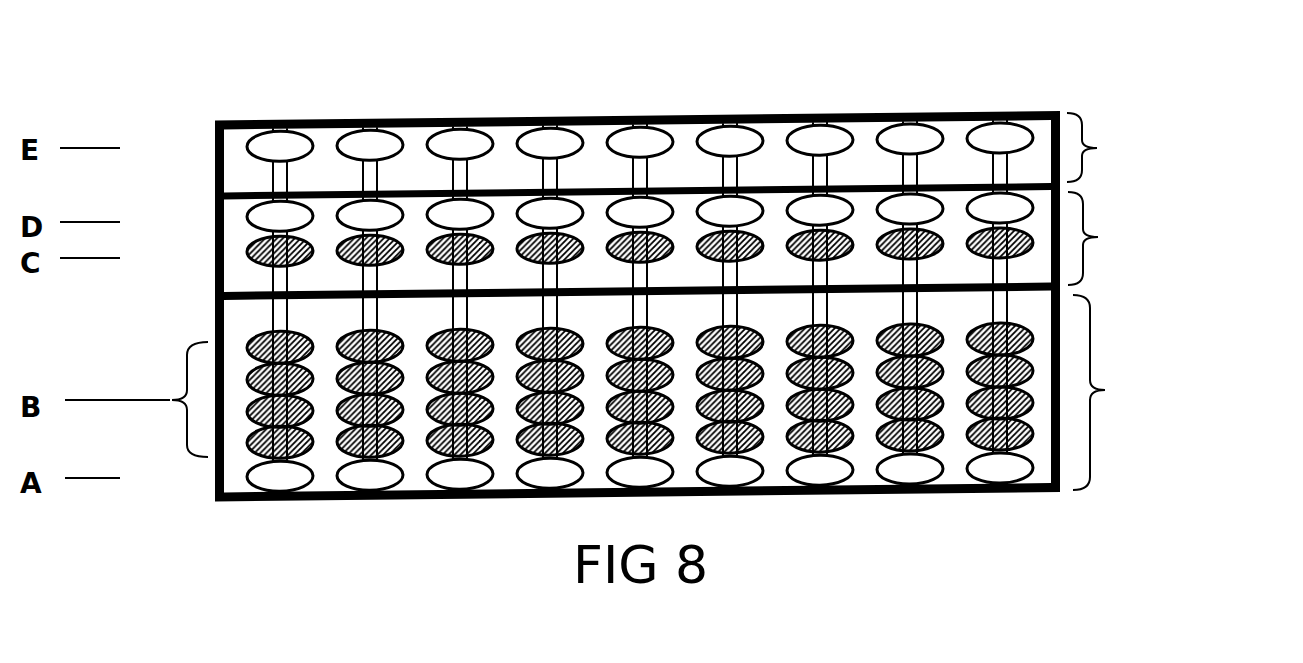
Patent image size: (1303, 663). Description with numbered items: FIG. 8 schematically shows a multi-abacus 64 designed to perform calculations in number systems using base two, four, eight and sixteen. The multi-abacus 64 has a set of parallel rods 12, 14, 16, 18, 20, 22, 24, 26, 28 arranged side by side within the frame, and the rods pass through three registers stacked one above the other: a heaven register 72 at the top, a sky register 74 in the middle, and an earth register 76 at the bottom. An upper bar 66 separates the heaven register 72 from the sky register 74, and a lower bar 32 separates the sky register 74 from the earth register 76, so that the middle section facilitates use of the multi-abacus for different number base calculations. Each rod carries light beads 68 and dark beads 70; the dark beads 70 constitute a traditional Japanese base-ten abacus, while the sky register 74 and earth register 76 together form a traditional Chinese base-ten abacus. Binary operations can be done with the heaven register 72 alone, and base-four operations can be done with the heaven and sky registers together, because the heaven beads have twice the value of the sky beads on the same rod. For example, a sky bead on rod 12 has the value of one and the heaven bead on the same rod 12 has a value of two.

The rod 12 is at (1009, 302).
The second rod 14 is at (919, 302).
The third rod 16 is at (829, 303).
The fourth rod 18 is at (739, 303).
The fifth rod 20 is at (649, 303).
The sixth rod 22 is at (559, 303).
The seventh rod 24 is at (469, 303).
The eighth rod 26 is at (379, 303).
The ninth rod 28 is at (289, 303).
The lower divider bar 32 is at (683, 290).
The abacus frame 64 is at (858, 108).
The upper divider bar 66 is at (775, 189).
The unhatched bead 68 is at (250, 146).
The hatched bead 70 is at (250, 255).
The heaven register 72 is at (1182, 147).
The sky register 74 is at (1156, 238).
The earth register 76 is at (1172, 392).